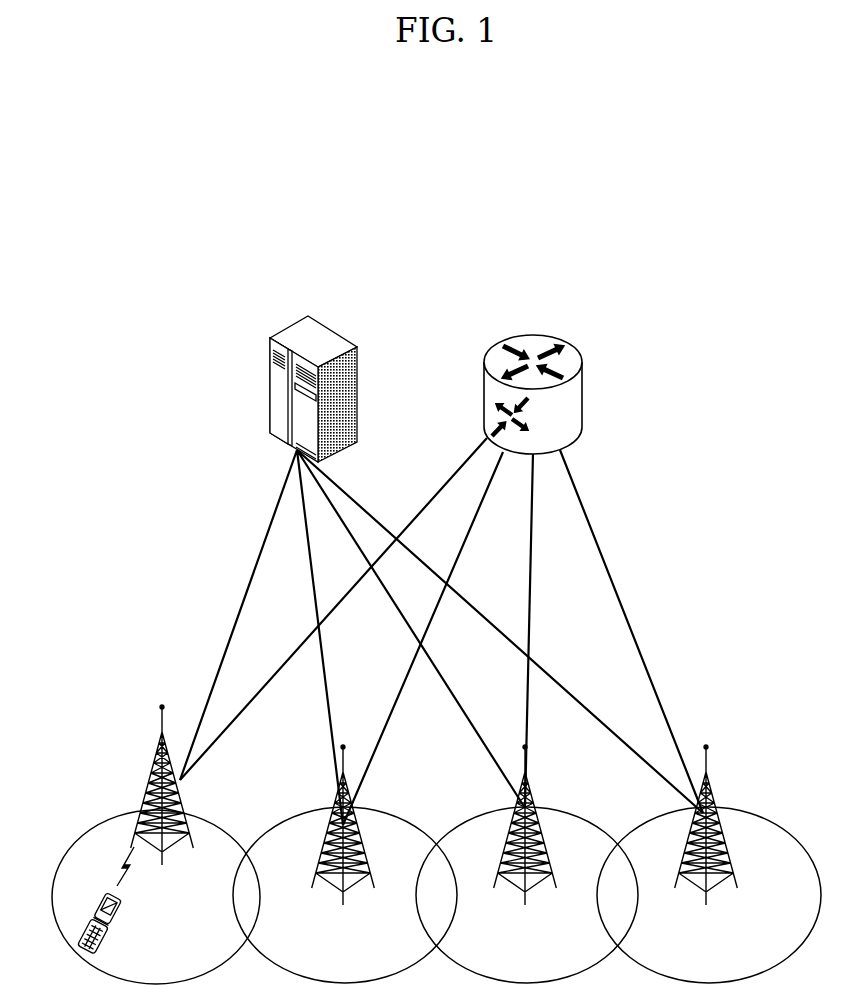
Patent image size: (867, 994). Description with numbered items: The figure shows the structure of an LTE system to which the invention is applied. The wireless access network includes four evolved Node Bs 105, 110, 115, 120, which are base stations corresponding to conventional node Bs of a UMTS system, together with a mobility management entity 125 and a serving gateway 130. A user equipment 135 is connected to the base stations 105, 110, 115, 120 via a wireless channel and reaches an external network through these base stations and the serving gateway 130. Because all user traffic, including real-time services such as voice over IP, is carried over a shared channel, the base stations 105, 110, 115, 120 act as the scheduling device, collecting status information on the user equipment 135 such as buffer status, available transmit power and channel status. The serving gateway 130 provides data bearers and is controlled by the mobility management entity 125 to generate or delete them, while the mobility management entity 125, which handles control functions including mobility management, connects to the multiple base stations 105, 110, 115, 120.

The evolved Node B 105 is at (150, 762).
The evolved Node B 110 is at (333, 785).
The evolved Node B 115 is at (534, 789).
The evolved Node B 120 is at (714, 788).
The mobility management entity 125 is at (300, 335).
The serving gateway 130 is at (530, 340).
The user equipment 135 is at (113, 912).